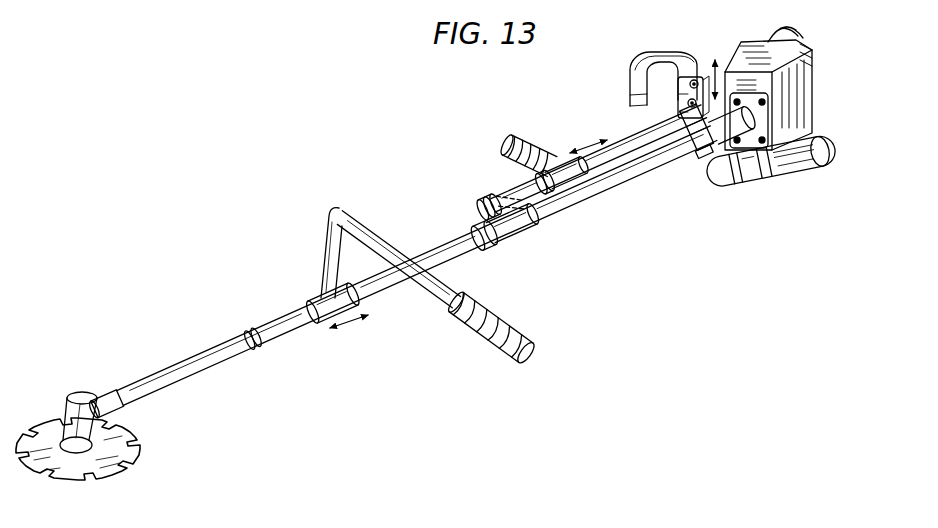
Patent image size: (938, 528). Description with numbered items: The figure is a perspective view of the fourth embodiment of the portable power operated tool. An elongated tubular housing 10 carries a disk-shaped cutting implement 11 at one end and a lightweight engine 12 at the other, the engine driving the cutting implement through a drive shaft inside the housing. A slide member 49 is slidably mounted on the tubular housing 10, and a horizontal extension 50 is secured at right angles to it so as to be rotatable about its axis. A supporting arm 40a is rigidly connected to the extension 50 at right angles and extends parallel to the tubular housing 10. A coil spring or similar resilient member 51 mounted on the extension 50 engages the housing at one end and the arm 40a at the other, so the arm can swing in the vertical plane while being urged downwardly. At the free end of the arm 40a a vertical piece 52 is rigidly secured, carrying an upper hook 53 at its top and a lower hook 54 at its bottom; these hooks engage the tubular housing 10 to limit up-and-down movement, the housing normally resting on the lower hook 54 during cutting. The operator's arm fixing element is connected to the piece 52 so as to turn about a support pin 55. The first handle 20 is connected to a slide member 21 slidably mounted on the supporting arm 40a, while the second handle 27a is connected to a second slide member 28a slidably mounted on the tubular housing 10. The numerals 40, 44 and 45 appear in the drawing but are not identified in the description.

The tubular housing 10 is at (562, 207).
The cutting implement 11 is at (118, 449).
The engine 12 is at (804, 113).
The first handle 20 is at (528, 133).
The slide member 21 is at (560, 160).
The second handle 27a is at (523, 330).
The second slide member 28a is at (325, 323).
The handle bar 40 is at (212, 9).
The supporting arm 40a is at (628, 136).
The handle member 44 is at (257, 7).
The handle member 45 is at (154, 11).
The slide member 49 is at (512, 240).
The horizontal extension 50 is at (477, 205).
The resilient member 51 is at (480, 225).
The vertical piece 52 is at (697, 150).
The upper hook 53 is at (695, 75).
The lower hook 54 is at (699, 153).
The support pin 55 is at (678, 117).